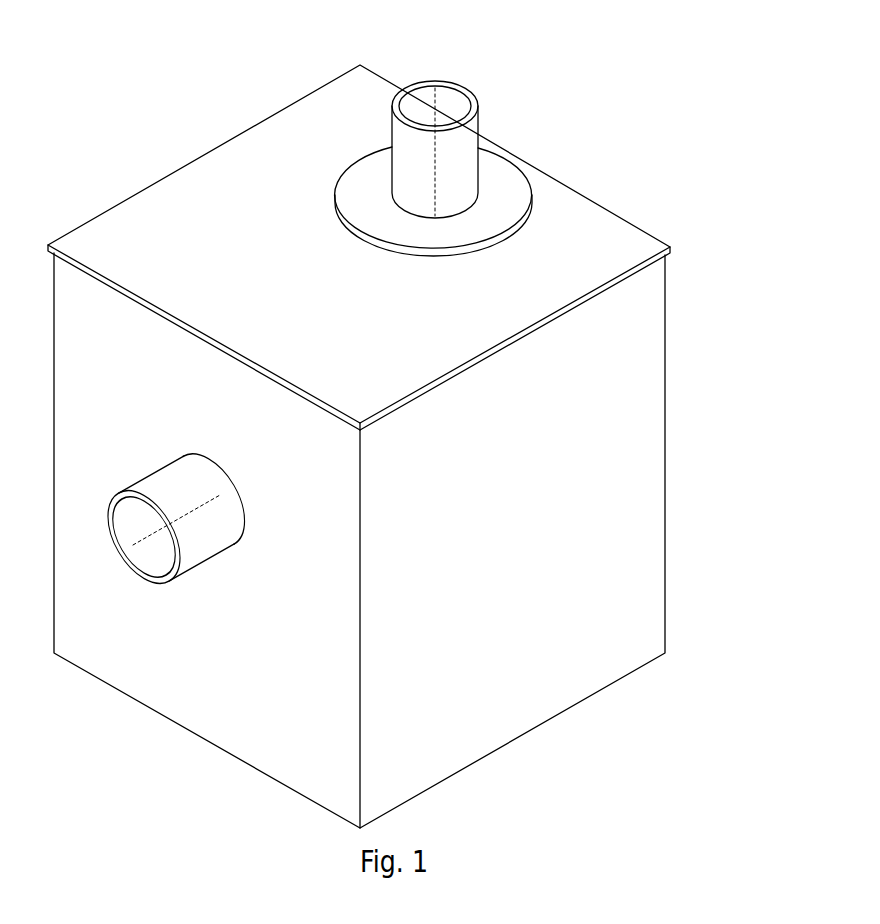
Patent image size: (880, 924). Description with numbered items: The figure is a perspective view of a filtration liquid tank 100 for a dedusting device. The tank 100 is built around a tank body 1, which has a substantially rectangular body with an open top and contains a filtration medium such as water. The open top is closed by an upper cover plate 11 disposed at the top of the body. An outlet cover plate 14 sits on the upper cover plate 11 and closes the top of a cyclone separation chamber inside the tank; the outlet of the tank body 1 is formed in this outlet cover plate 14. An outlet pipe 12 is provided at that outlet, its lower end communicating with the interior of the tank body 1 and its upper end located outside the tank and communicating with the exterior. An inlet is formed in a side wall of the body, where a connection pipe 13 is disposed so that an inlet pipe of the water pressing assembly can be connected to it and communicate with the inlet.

The filtration liquid tank 100 is at (394, 424).
The tank body 1 is at (648, 422).
The upper cover plate 11 is at (620, 240).
The outlet pipe 12 is at (460, 162).
The connection pipe 13 is at (207, 537).
The outlet cover plate 14 is at (513, 200).